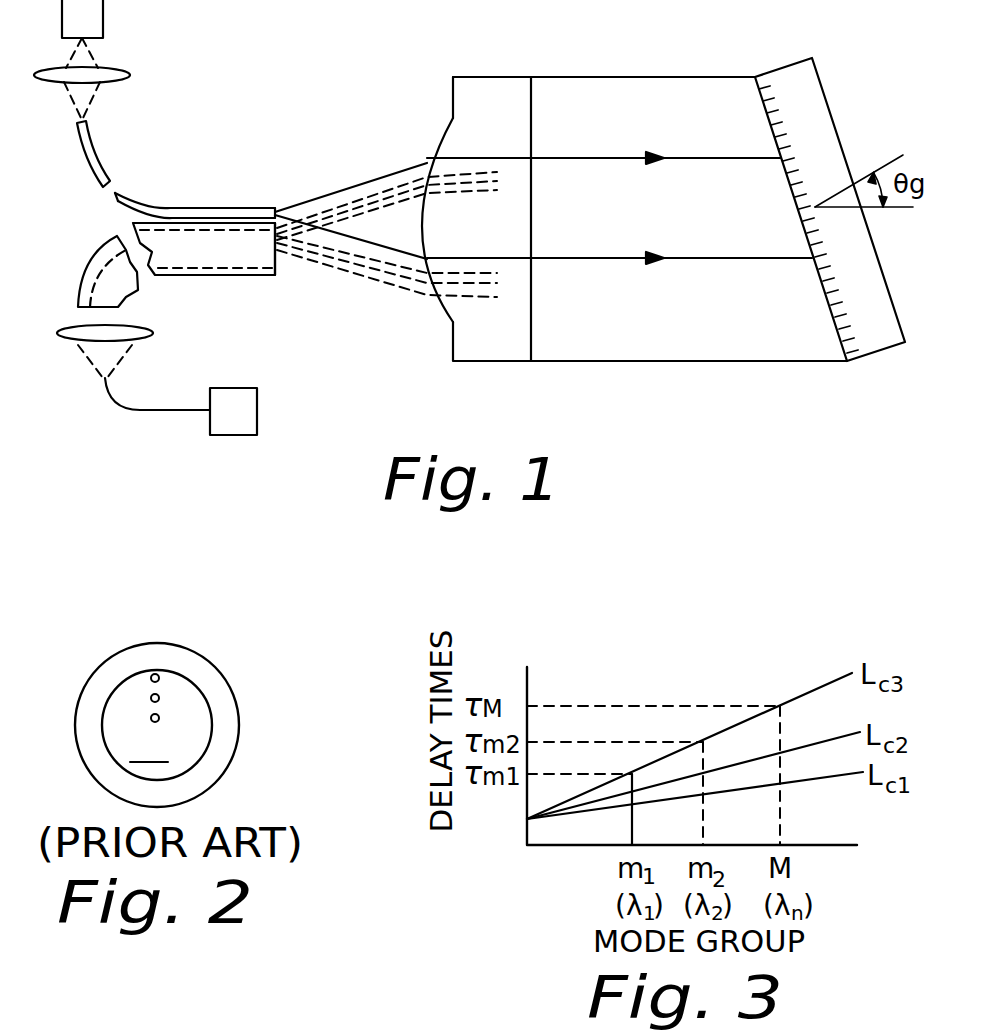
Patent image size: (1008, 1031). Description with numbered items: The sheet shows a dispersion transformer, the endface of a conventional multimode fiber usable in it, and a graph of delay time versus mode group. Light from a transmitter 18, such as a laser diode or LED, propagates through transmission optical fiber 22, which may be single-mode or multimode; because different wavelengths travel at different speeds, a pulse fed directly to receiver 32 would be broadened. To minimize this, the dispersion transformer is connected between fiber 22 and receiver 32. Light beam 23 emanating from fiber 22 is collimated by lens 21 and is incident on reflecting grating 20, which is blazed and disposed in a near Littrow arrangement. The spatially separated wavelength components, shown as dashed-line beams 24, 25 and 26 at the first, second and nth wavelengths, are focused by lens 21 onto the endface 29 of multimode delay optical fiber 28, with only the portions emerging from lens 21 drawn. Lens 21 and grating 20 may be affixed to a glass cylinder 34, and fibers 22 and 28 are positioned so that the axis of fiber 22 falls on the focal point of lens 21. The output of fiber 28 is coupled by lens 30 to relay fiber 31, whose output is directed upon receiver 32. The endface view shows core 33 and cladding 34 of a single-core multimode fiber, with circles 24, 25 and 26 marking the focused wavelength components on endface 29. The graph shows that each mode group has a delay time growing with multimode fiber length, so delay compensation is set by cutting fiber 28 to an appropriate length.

In FIG. 1, the transmitter 18 is at (103, 12).
In FIG. 1, the reflecting grating 20 is at (830, 103).
In FIG. 1, the lens 21 is at (493, 363).
In FIG. 1, the transmission optical fiber 22 is at (143, 203).
In FIG. 1, the light beam 23 is at (303, 228).
In FIG. 1, the wavelength component beam 24 is at (480, 296).
In FIG. 2, the wavelength component beam 24 is at (150, 718).
In FIG. 1, the wavelength component beam 25 is at (348, 217).
In FIG. 2, the wavelength component beam 25 is at (150, 698).
In FIG. 1, the wavelength component beam 26 is at (401, 192).
In FIG. 2, the wavelength component beam 26 is at (150, 678).
In FIG. 1, the multimode delay optical fiber 28 is at (217, 284).
In FIG. 2, the multimode delay optical fiber 28 is at (236, 764).
In FIG. 1, the endface 29 is at (278, 267).
In FIG. 2, the endface 29 is at (149, 746).
In FIG. 1, the lens 30 is at (148, 320).
In FIG. 1, the relay fiber 31 is at (150, 412).
In FIG. 1, the receiver 32 is at (257, 410).
In FIG. 2, the core 33 is at (195, 705).
In FIG. 1, the glass cylinder 34 is at (624, 77).
In FIG. 2, the glass cylinder 34 is at (225, 733).